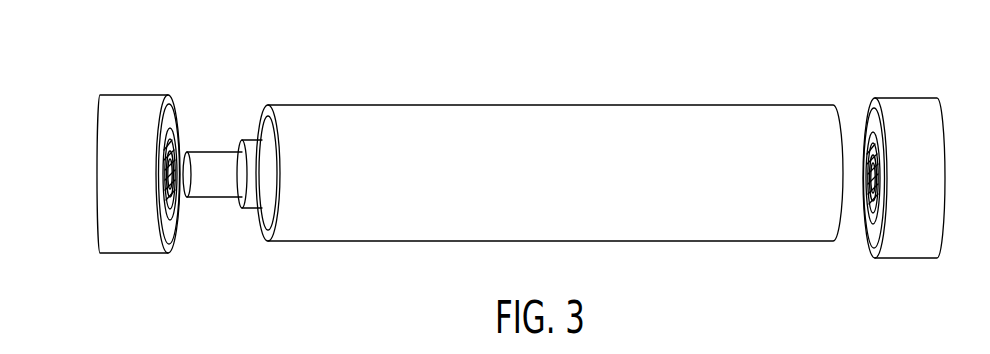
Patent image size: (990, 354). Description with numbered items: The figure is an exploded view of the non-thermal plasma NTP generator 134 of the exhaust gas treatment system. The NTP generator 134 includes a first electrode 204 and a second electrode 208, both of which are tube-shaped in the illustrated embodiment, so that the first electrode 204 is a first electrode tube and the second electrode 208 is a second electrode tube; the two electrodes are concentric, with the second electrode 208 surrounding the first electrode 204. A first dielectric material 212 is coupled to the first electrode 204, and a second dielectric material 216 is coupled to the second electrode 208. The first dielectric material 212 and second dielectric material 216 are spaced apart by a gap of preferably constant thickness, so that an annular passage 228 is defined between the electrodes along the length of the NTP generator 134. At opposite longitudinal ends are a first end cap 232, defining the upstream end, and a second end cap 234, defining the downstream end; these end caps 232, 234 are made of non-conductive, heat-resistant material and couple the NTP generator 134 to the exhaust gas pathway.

The NTP generator 134 is at (535, 178).
The first electrode 204 is at (208, 190).
The second electrode 208 is at (450, 127).
The first dielectric material 212 is at (243, 138).
The second dielectric material 216 is at (265, 241).
The passage 228 is at (258, 117).
The first end cap 232 is at (135, 108).
The second end cap 234 is at (912, 107).